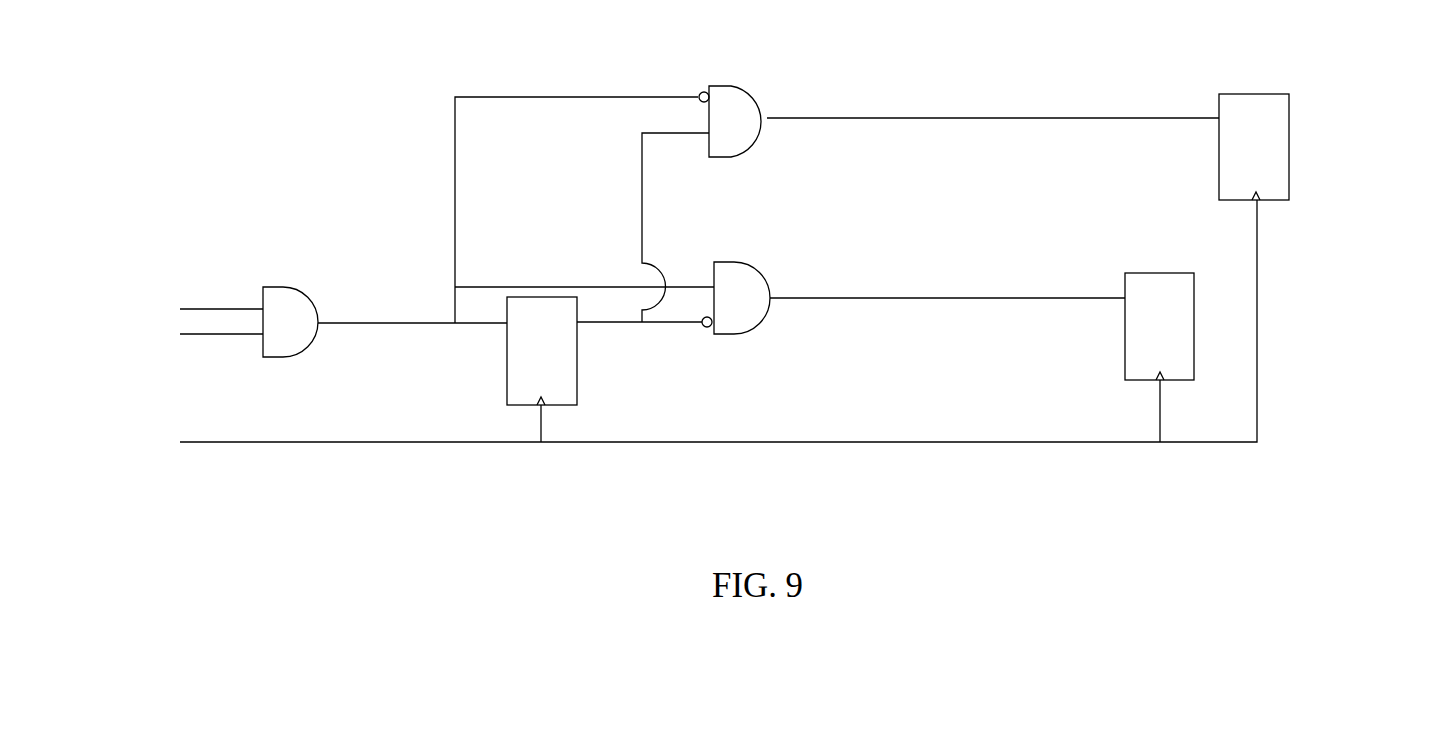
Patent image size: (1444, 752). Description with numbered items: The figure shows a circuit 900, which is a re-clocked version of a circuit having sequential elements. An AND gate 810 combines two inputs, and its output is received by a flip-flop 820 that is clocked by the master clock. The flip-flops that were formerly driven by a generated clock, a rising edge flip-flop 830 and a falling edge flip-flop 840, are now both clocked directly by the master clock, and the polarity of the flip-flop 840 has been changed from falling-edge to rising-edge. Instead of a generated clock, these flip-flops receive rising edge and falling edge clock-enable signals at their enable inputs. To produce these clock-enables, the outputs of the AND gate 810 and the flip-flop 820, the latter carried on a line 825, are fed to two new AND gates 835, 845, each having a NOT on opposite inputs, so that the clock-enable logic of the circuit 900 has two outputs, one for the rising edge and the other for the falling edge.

The circuit 900 is at (354, 75).
The AND gate 810 is at (303, 297).
The flip-flop 820 is at (577, 353).
The delayed signal line 825 is at (677, 322).
The rising edge flip-flop 830 is at (1125, 343).
The AND gate 835 is at (750, 270).
The falling edge flip-flop 840 is at (1289, 163).
The AND gate 845 is at (746, 92).